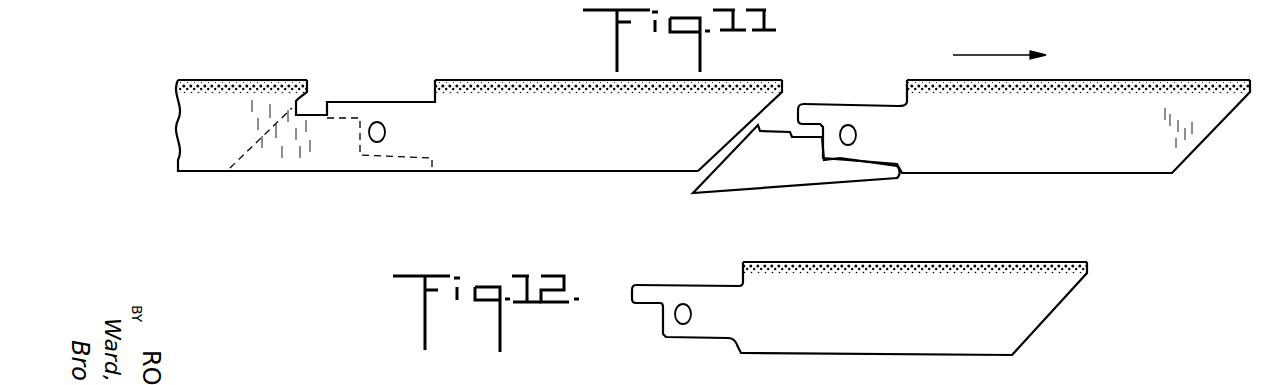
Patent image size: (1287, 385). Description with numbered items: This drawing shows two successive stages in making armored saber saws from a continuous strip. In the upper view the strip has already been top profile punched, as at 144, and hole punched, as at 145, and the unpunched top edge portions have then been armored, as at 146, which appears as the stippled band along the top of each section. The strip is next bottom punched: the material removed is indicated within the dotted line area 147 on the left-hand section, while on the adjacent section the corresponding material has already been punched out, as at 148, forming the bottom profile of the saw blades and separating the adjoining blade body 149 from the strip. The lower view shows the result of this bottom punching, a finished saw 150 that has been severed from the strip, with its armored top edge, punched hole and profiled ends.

In FIG. 11, the top profile punched portion 144 is at (313, 101).
In FIG. 11, the punched hole 145 is at (385, 133).
In FIG. 11, the armored top edge portion 146 is at (206, 80).
In FIG. 11, the dotted line area 147 is at (289, 158).
In FIG. 11, the punched-out portion 148 is at (773, 163).
In FIG. 11, the adjacent board 149 is at (1106, 150).
In FIG. 12, the finished saw 150 is at (980, 338).